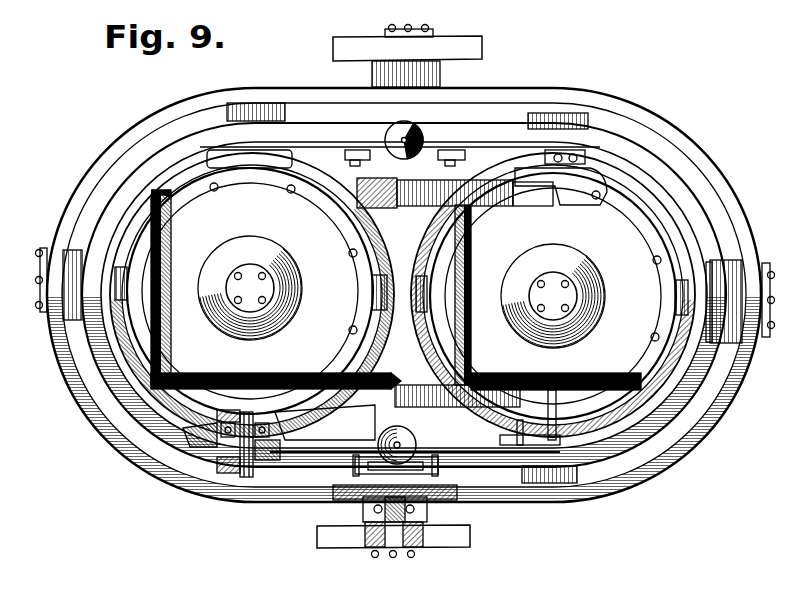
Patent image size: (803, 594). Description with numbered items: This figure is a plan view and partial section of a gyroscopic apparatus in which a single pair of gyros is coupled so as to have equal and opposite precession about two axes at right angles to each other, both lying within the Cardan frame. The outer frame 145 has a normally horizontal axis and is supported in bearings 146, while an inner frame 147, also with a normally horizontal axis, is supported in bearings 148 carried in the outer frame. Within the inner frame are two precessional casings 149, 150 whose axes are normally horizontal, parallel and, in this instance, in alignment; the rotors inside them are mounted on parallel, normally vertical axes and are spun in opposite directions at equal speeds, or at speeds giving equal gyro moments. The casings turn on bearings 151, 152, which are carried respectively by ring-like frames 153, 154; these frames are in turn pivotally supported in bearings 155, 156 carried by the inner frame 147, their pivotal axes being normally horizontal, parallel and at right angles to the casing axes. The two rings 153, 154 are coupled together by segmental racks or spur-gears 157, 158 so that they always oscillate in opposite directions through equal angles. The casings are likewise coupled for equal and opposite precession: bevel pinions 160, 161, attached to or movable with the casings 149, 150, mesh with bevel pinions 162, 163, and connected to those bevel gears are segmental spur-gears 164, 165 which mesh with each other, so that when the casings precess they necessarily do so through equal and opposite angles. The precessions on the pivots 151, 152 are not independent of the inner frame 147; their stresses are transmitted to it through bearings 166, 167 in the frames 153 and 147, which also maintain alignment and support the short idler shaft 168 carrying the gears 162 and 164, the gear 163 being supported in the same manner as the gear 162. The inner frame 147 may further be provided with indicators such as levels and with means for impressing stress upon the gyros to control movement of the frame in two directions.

The frame 145 is at (664, 466).
The bearings 146 is at (415, 58).
The inner frame 147 is at (150, 423).
The bearings 148 is at (76, 281).
The precessional casing 149 is at (250, 291).
The precessional casing 150 is at (553, 296).
The bearing 151 is at (370, 293).
The bearing 152 is at (673, 302).
The frame 153 is at (160, 180).
The frame 154 is at (655, 200).
The bearings 155 is at (254, 132).
The bearings 156 is at (567, 122).
The segmental rack or spur-gear 157 is at (396, 208).
The segmental rack or spur-gear 158 is at (504, 206).
The bevel pinion 160 is at (165, 333).
The bevel pinion 161 is at (467, 340).
The bevel pinion 162 is at (275, 375).
The bevel pinion 163 is at (588, 384).
The segmental spur-gear 164 is at (372, 410).
The segmental spur-gear 165 is at (437, 406).
The bearing 166 is at (182, 442).
The bearing 167 is at (230, 474).
The short idler shaft 168 is at (247, 478).